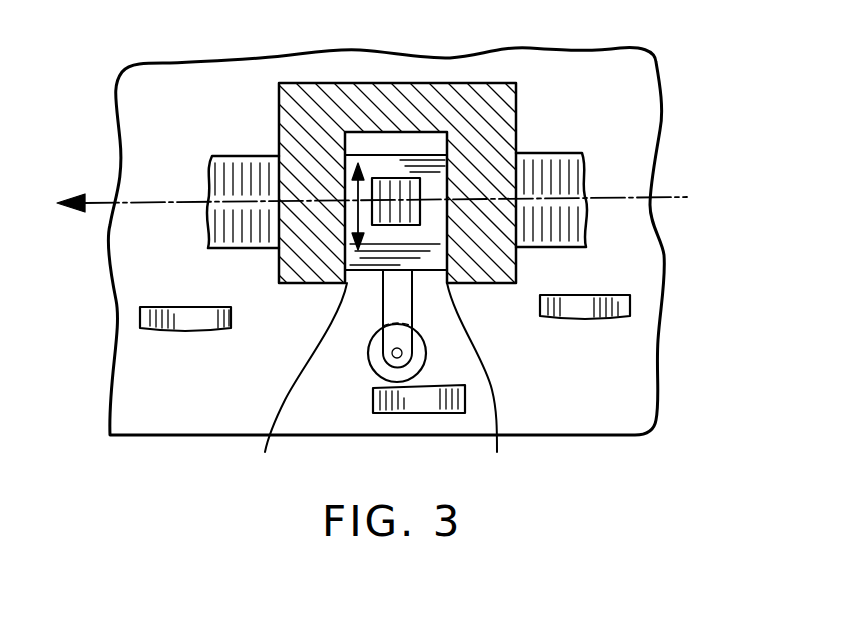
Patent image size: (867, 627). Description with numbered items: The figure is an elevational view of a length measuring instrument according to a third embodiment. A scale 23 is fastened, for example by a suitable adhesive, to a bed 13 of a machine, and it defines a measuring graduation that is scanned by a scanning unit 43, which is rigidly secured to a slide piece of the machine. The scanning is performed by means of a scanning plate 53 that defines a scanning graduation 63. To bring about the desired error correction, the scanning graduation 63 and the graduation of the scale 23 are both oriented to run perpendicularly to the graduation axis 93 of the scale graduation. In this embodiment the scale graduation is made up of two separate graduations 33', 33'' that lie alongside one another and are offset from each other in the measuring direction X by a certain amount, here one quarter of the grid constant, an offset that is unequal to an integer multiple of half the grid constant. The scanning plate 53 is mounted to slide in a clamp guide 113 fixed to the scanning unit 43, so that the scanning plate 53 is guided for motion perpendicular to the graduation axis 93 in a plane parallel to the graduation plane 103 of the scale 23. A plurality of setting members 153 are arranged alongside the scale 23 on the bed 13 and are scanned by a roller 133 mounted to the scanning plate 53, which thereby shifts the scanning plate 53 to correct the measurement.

The bed 13 is at (632, 385).
The scale 23 is at (580, 240).
The graduation 33' is at (644, 222).
The graduation 33'' is at (645, 137).
The scanning unit 43 is at (492, 98).
The scanning plate 53 is at (368, 262).
The scanning graduation 63 is at (395, 178).
The graduation axis 93 is at (650, 200).
The graduation plane 103 is at (560, 158).
The clamp guide 113 is at (381, 382).
The roller 133 is at (378, 367).
The setting members 153 is at (142, 311).
The measuring direction X is at (361, 204).